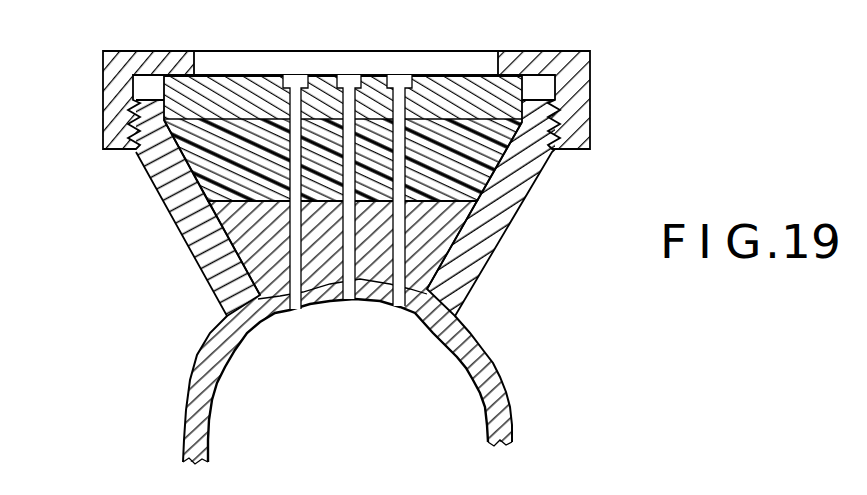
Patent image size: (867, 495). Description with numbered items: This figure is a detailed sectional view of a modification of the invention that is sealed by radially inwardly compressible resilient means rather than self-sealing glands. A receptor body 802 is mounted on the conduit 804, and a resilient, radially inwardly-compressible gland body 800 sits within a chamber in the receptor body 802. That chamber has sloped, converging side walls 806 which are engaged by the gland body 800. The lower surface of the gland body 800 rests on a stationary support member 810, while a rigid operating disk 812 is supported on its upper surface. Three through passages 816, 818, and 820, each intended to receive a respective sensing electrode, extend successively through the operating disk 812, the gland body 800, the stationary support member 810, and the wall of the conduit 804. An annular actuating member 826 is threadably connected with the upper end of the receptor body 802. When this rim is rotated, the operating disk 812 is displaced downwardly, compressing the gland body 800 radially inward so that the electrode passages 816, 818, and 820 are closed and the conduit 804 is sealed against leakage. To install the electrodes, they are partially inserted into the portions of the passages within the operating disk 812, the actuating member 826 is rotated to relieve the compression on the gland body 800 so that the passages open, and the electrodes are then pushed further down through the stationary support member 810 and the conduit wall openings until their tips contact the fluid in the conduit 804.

The gland body 800 is at (477, 176).
The receptor body 802 is at (452, 308).
The conduit 804 is at (200, 416).
The side walls 806 is at (228, 252).
The stationary support member 810 is at (258, 282).
The operating disk 812 is at (484, 94).
The through passage 816 is at (293, 85).
The through passage 818 is at (352, 85).
The through passage 820 is at (400, 85).
The annular actuating member 826 is at (110, 104).